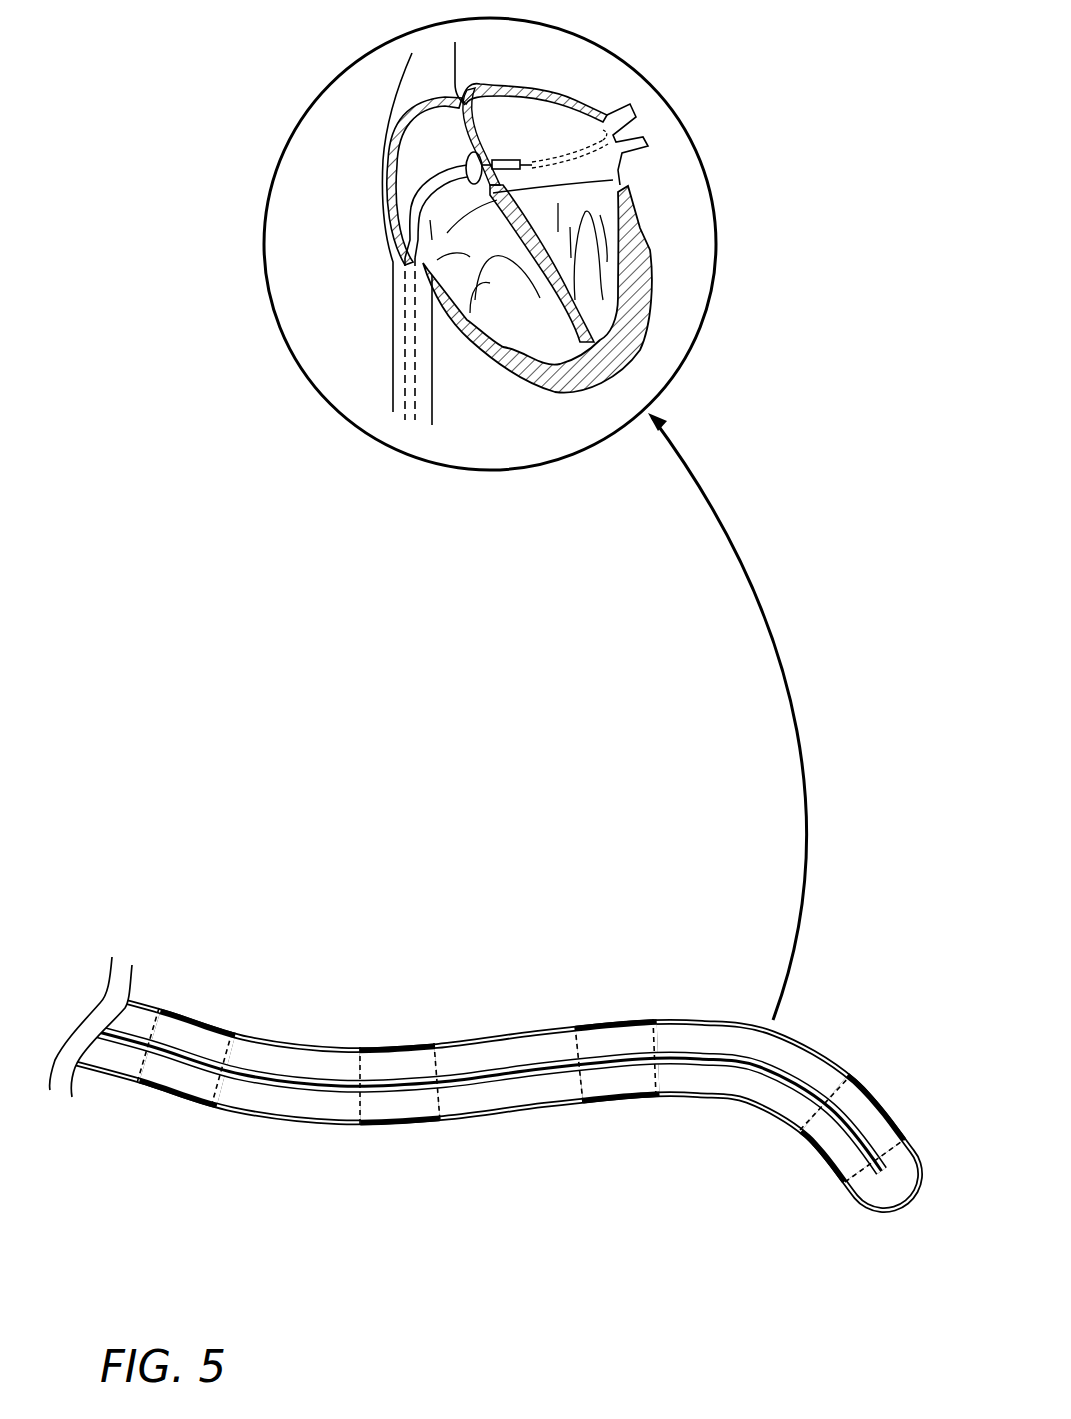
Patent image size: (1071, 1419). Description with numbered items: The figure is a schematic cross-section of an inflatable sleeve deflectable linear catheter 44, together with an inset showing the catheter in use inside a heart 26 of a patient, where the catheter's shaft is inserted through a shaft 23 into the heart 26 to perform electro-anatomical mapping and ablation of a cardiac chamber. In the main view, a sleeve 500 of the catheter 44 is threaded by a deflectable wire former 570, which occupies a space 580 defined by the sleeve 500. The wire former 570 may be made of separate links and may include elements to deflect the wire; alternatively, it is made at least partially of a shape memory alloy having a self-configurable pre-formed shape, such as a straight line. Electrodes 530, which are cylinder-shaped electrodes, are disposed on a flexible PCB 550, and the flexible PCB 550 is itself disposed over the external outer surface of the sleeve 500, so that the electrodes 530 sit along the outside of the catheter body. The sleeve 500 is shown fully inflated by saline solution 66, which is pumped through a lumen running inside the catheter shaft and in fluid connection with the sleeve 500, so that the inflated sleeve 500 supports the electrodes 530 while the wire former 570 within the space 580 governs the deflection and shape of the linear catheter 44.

The inflatable sleeve deflectable linear catheter 44 is at (452, 621).
The shaft 23 is at (417, 192).
The heart 26 is at (638, 293).
The sleeve 500 is at (452, 1073).
The electrodes 530 is at (607, 1017).
The flexible PCB 550 is at (506, 1028).
The deflectable wire former 570 is at (695, 1057).
The space 580 is at (471, 1068).
The saline solution 66 is at (817, 1070).